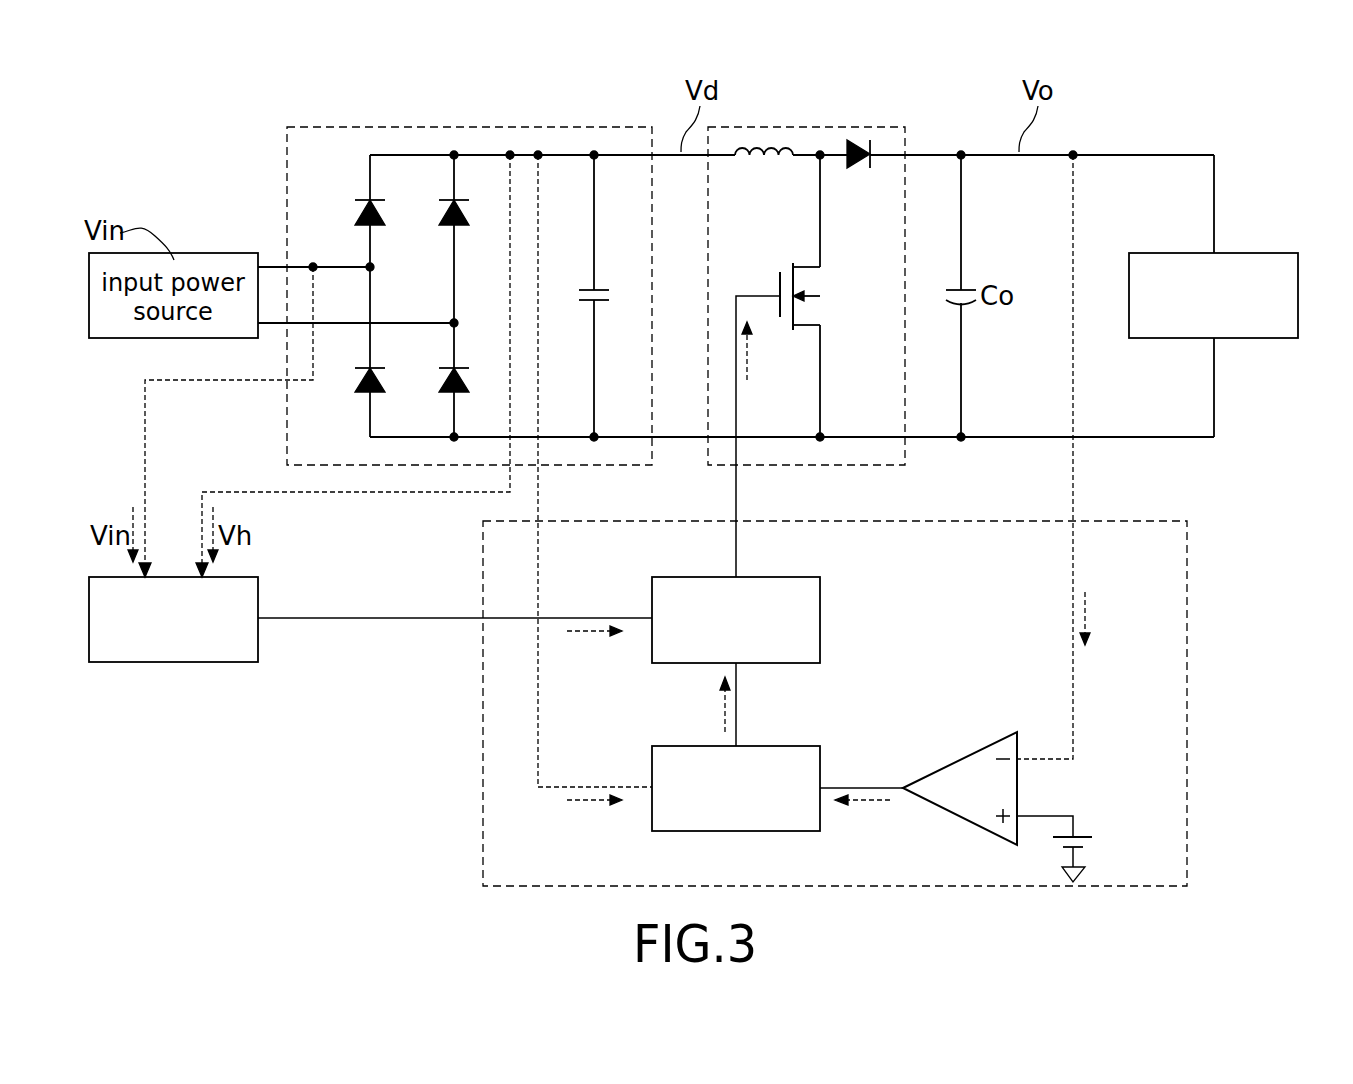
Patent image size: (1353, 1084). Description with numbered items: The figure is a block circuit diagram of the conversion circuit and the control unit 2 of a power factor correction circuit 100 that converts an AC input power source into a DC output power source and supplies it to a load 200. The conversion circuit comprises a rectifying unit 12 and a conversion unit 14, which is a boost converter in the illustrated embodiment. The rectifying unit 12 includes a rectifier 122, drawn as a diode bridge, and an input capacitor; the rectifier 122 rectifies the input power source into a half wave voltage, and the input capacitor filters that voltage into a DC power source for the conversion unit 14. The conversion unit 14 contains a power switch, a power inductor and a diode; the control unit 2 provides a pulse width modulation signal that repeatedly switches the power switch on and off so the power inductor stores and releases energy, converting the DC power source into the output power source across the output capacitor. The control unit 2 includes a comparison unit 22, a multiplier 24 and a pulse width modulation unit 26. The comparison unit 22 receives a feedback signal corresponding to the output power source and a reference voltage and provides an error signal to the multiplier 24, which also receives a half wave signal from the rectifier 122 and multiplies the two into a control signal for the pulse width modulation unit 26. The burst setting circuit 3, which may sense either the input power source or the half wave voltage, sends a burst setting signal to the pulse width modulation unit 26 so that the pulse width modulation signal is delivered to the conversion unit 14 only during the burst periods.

The power factor correction circuit 100 is at (432, 68).
The rectifying unit 12 is at (470, 128).
The rectifier 122 is at (396, 155).
The conversion unit 14 is at (808, 128).
The control unit 2 is at (1128, 528).
The load 200 is at (1225, 262).
The burst setting circuit 3 is at (173, 653).
The comparison unit 22 is at (960, 770).
The multiplier 24 is at (748, 753).
The pulse width modulation unit 26 is at (748, 585).